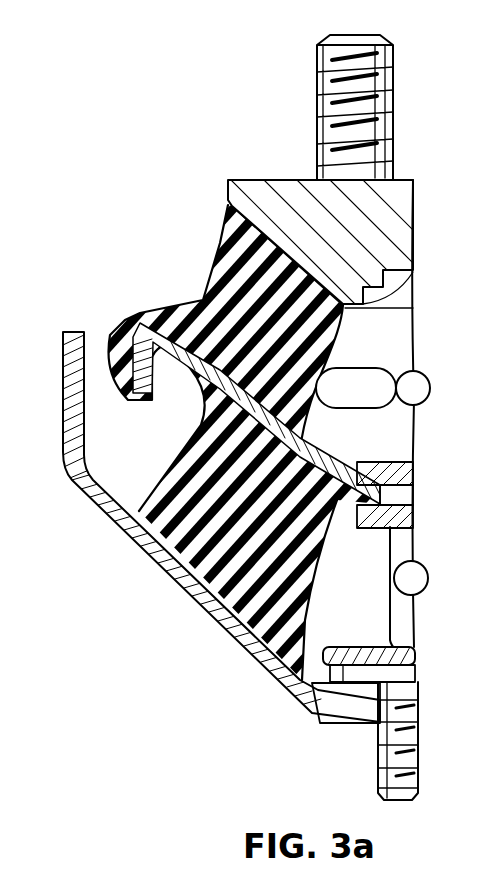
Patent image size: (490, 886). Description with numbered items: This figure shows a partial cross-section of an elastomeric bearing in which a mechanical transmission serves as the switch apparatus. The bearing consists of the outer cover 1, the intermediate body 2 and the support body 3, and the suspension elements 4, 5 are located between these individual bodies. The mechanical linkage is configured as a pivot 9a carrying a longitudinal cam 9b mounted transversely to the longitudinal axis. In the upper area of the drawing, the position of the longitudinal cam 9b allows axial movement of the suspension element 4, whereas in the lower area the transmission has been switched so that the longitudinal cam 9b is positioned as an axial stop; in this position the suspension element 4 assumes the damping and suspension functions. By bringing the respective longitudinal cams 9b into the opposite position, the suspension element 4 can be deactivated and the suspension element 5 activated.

The outer cover 1 is at (393, 223).
The intermediate body 2 is at (200, 424).
The support body 3 is at (333, 690).
The suspension element 4 is at (185, 297).
The suspension element 5 is at (186, 600).
The pivot 9a is at (407, 398).
The longitudinal cam 9b is at (362, 382).